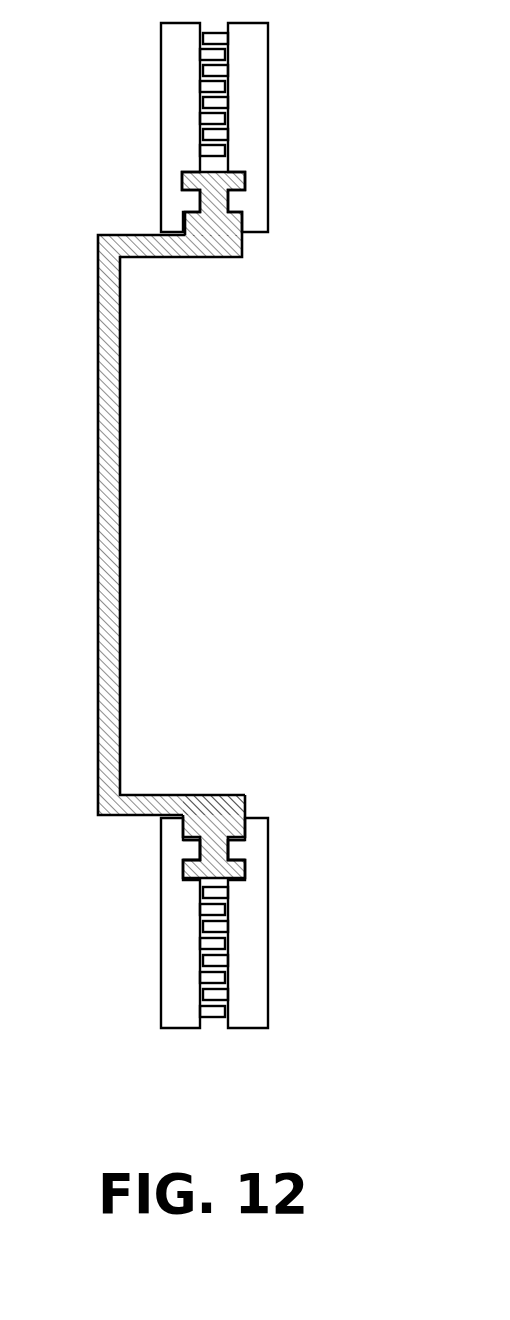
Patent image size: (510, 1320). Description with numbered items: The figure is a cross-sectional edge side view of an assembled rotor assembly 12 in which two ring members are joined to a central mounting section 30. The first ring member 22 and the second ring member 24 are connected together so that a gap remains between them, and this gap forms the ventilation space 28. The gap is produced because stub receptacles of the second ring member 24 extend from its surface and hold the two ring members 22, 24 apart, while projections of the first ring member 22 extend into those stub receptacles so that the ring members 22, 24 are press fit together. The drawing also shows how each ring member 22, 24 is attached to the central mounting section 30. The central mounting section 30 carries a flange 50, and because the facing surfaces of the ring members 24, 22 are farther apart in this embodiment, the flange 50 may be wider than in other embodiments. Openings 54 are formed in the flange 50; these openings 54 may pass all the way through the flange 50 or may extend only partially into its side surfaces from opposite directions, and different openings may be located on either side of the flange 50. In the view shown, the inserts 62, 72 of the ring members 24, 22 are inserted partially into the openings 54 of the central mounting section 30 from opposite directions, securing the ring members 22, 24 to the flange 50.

The shutter panel assembly 12 is at (216, 572).
The first ring member 22 is at (142, 951).
The second ring member 24 is at (293, 952).
The ventilation space 28 is at (213, 1034).
The central mounting section 30 is at (97, 693).
The flange 50 is at (246, 250).
The openings 54 is at (232, 796).
The insert 62 is at (238, 848).
The insert 72 is at (190, 848).